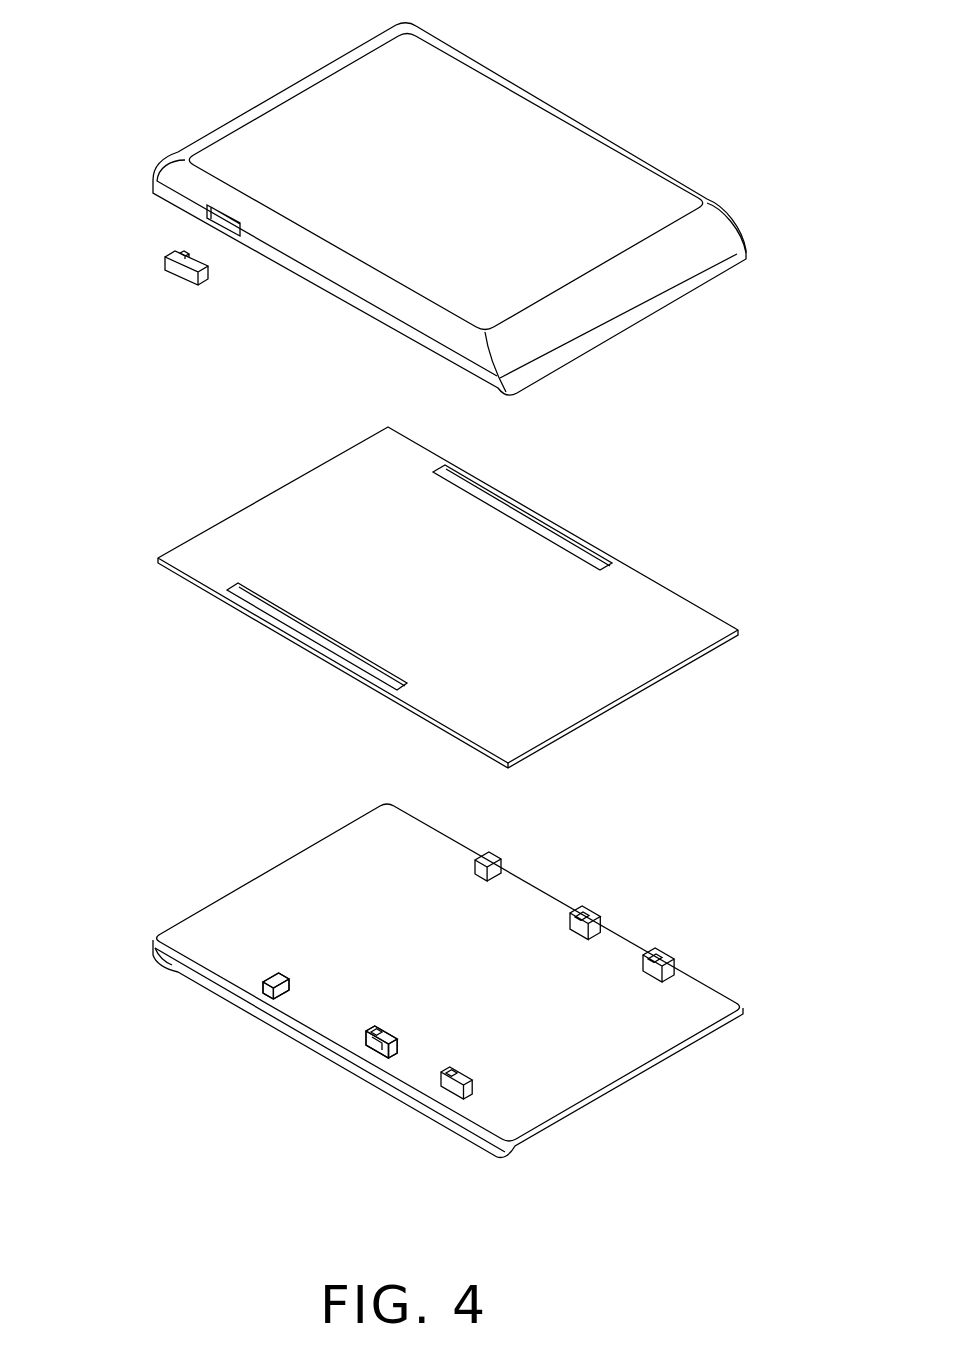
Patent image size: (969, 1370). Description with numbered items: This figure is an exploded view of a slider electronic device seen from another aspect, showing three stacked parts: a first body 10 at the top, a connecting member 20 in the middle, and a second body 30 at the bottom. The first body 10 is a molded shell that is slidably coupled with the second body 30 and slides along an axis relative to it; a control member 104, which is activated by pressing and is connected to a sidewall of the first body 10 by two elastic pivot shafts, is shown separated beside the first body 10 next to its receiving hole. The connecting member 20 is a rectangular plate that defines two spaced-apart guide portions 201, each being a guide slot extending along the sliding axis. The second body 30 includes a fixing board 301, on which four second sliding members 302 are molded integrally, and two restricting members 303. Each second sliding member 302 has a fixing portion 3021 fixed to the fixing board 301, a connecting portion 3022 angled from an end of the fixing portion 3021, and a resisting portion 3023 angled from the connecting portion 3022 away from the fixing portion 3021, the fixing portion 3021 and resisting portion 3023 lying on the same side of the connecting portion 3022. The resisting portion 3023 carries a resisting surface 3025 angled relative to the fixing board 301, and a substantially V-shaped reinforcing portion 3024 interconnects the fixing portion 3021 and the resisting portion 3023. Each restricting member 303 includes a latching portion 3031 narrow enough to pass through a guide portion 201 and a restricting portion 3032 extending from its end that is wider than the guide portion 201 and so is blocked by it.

The first body 10 is at (572, 172).
The control member 104 is at (178, 272).
The connecting member 20 is at (640, 597).
The guide portion 201 is at (530, 525).
The second body 30 is at (663, 1025).
The fixing board 301 is at (444, 855).
The second sliding member 302 is at (419, 1038).
The fixing portion 3021 is at (374, 1055).
The connecting portion 3022 is at (384, 1068).
The resisting portion 3023 is at (367, 1030).
The reinforcing portion 3024 is at (373, 1045).
The resisting surface 3025 is at (395, 1065).
The restricting member 303 is at (256, 959).
The latching portion 3031 is at (284, 1000).
The restricting portion 3032 is at (258, 978).